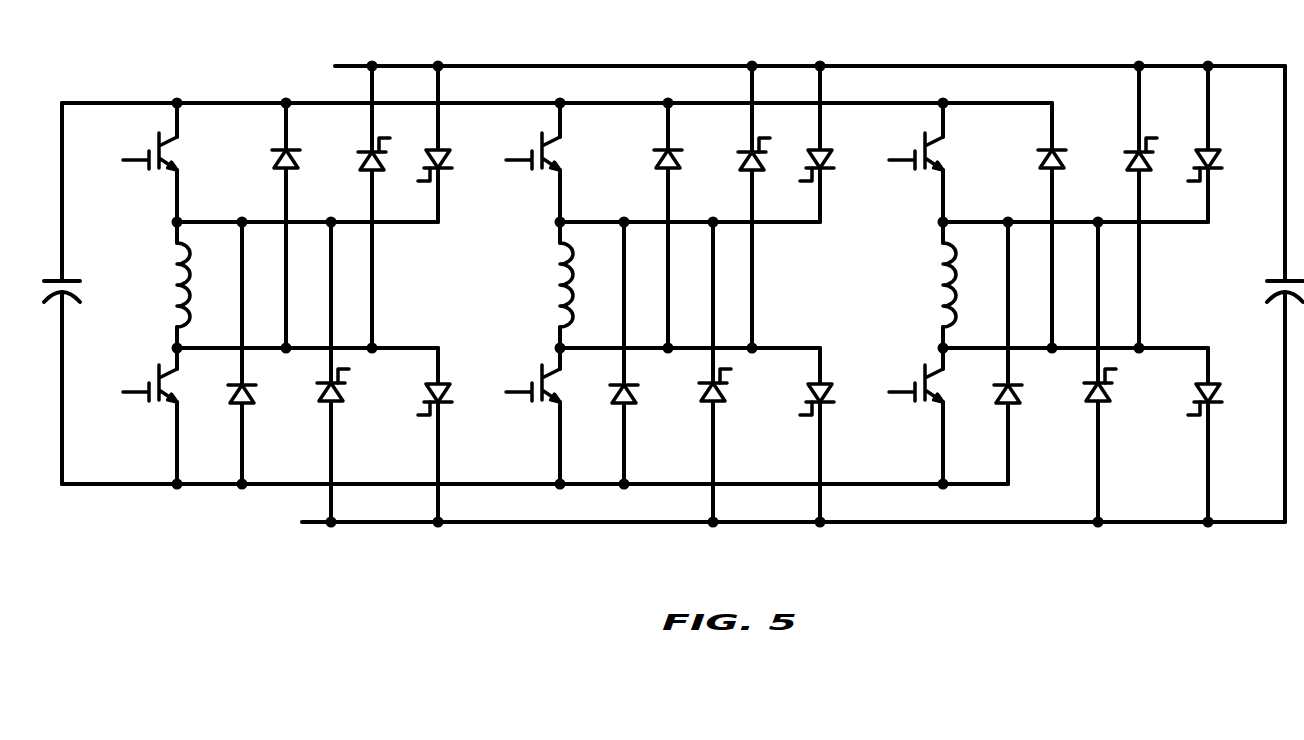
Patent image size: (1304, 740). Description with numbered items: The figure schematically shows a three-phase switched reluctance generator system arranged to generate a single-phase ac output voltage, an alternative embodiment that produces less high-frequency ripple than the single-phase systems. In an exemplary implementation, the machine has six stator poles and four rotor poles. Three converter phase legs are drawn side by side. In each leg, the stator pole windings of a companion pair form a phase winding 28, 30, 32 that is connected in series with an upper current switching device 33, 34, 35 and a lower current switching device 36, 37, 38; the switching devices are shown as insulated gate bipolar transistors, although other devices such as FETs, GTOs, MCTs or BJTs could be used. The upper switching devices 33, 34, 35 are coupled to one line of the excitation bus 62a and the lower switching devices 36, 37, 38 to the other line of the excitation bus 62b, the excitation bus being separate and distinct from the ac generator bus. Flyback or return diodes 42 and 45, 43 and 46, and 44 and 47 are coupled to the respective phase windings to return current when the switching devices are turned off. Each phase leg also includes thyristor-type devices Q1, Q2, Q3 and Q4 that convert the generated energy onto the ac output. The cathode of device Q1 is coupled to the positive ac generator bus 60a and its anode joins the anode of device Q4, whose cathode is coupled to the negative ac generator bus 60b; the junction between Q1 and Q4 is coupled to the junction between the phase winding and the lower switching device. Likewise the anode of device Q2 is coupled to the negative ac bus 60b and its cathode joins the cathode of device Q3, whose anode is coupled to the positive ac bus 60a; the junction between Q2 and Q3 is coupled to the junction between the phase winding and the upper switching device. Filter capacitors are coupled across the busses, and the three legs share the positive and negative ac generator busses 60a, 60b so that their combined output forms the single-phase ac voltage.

The excitation bus 62a is at (106, 101).
The excitation bus 62b is at (103, 486).
The positive ac generator bus 60a is at (1253, 66).
The negative ac generator bus 60b is at (1256, 525).
The upper current switching device 33 is at (164, 174).
The upper current switching device 34 is at (533, 163).
The upper current switching device 35 is at (916, 163).
The lower current switching device 36 is at (160, 410).
The lower current switching device 37 is at (533, 416).
The lower current switching device 38 is at (916, 416).
The phase winding 28 is at (177, 272).
The phase winding 30 is at (548, 285).
The phase winding 32 is at (931, 285).
The flyback diode 42 is at (290, 167).
The flyback diode 43 is at (689, 225).
The flyback diode 44 is at (1073, 225).
The flyback diode 45 is at (257, 400).
The flyback diode 46 is at (650, 353).
The flyback diode 47 is at (1034, 353).
The thyristor-type device Q1 is at (380, 162).
The thyristor-type device Q2 is at (338, 396).
The thyristor-type device Q3 is at (442, 162).
The thyristor-type device Q4 is at (448, 392).